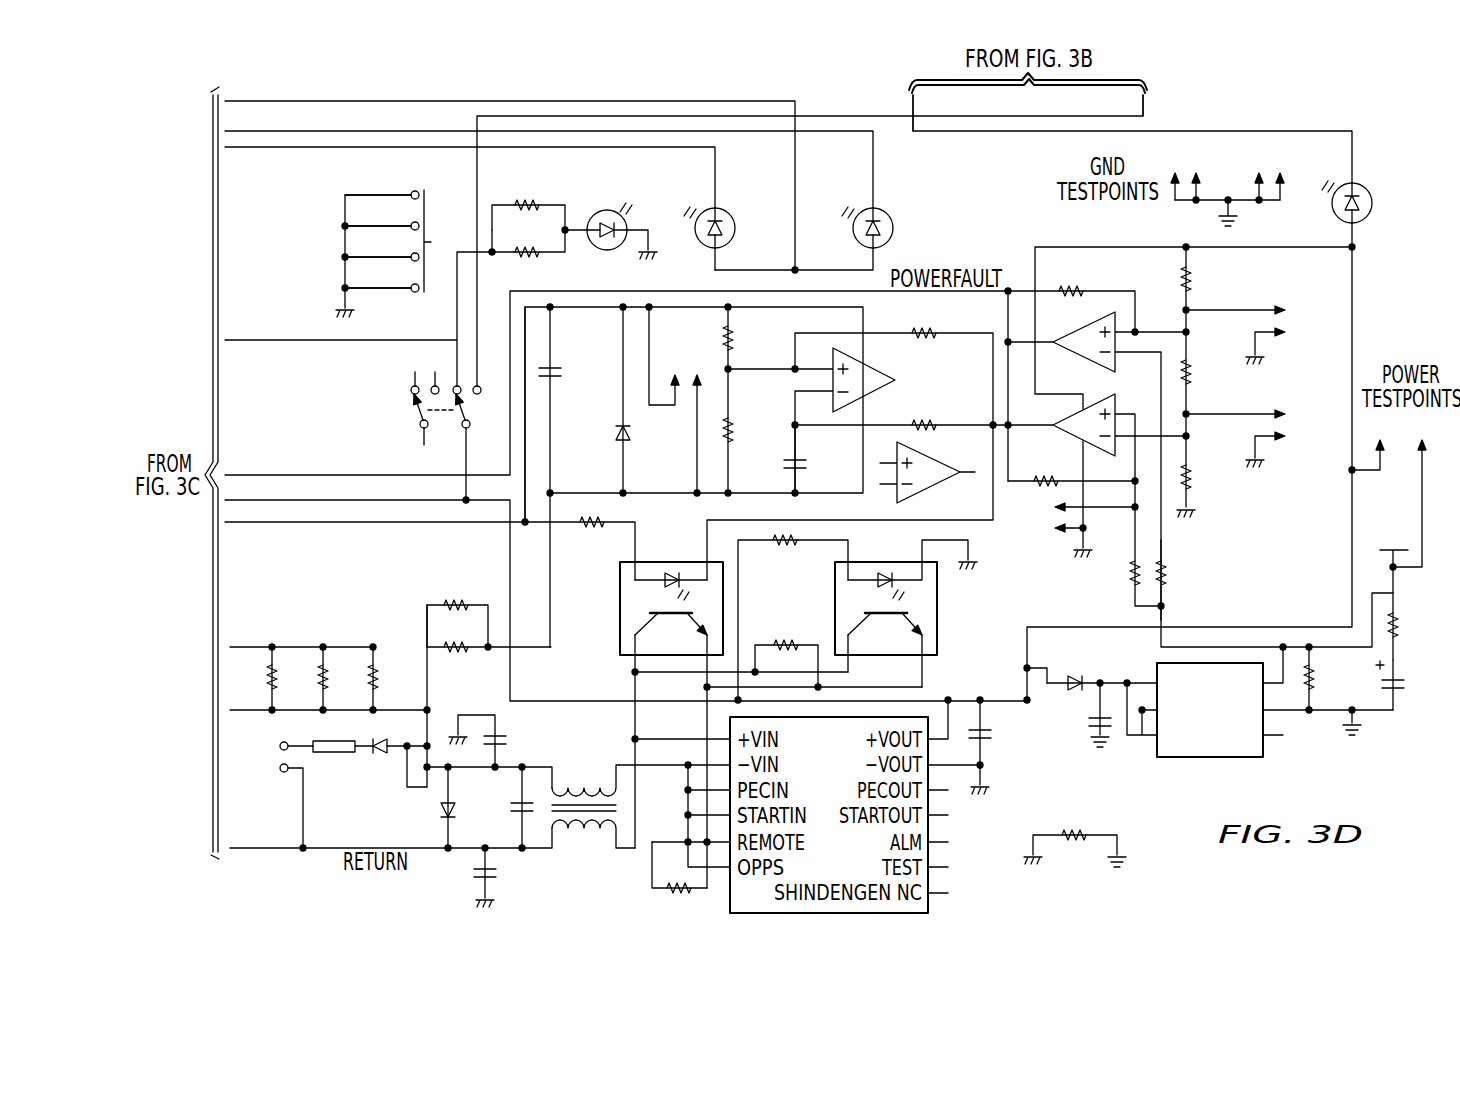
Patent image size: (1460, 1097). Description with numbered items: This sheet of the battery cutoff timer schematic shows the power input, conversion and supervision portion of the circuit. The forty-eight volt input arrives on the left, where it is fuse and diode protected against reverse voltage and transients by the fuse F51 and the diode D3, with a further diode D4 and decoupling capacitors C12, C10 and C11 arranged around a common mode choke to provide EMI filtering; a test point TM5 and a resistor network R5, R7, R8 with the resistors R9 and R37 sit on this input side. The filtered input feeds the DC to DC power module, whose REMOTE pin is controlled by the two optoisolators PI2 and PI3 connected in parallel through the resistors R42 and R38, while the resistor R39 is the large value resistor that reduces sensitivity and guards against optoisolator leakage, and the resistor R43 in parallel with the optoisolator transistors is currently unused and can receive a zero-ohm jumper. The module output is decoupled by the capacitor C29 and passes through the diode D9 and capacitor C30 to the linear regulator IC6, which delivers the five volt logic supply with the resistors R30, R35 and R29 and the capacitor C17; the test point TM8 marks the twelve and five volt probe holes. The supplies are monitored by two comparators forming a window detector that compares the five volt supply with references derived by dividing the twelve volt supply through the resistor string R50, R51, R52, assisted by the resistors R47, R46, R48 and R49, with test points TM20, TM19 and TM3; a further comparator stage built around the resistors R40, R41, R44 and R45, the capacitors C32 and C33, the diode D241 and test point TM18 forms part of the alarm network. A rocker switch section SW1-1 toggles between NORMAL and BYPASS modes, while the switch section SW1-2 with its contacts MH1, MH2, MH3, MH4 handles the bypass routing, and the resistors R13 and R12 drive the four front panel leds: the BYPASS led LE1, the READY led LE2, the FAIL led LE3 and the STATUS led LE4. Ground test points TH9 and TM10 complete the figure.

The normal/bypass switch section SW1-2 is at (342, 253).
The mechanical contact MH1 is at (378, 183).
The mechanical contact MH2 is at (378, 214).
The mechanical contact MH3 is at (378, 246).
The mechanical contact MH4 is at (378, 278).
The resistor R13 is at (528, 219).
The resistor R12 is at (528, 256).
The bypass LED LE1 is at (611, 219).
The ready LED LE2 is at (731, 220).
The fail LED LE3 is at (822, 221).
The status LED LE4 is at (1371, 197).
The ground test point TH9 is at (1185, 172).
The ground test point TM10 is at (1269, 172).
The resistor R47 is at (1070, 294).
The resistor R46 is at (1073, 466).
The test point TM3 is at (1077, 518).
The resistor R48 is at (1129, 545).
The resistor R49 is at (1180, 580).
The resistor R50 is at (1205, 289).
The resistor R51 is at (1206, 384).
The resistor R52 is at (1204, 476).
The test point TM20 is at (1261, 334).
The test point TM19 is at (1261, 438).
The power test point TM8 is at (1394, 489).
The resistor R35 is at (1411, 613).
The capacitor C17 is at (1408, 685).
The resistor R30 is at (1327, 678).
The voltage regulator IC IC6 is at (1205, 723).
The diode D9 is at (1102, 668).
The capacitor C30 is at (1082, 715).
The resistor R29 is at (1075, 834).
The capacitor C32 is at (568, 477).
The diode D241 is at (600, 400).
The test point TM18 is at (678, 400).
The resistor R40 is at (747, 339).
The resistor R41 is at (747, 431).
The resistor R44 is at (850, 440).
The resistor R45 is at (901, 412).
The capacitor C33 is at (814, 459).
The bypass switch section SW1-1 is at (421, 435).
The resistor R38 is at (578, 548).
The resistor R9 is at (457, 609).
The resistor R37 is at (489, 632).
The resistor R5 is at (285, 678).
The resistor R7 is at (336, 678).
The resistor R8 is at (386, 678).
The test point TM5 is at (277, 795).
The fuse F51 is at (343, 761).
The diode D3 is at (400, 763).
The diode D4 is at (434, 807).
The capacitor C12 is at (503, 809).
The capacitor C10 is at (496, 741).
The capacitor C11 is at (504, 876).
The optoisolator PI2 is at (671, 711).
The optoisolator PI3 is at (906, 610).
The resistor R42 is at (791, 619).
The resistor in parallel with the optoisolator transistors R43 is at (786, 650).
The resistor R39 is at (679, 880).
The capacitor C29 is at (997, 747).